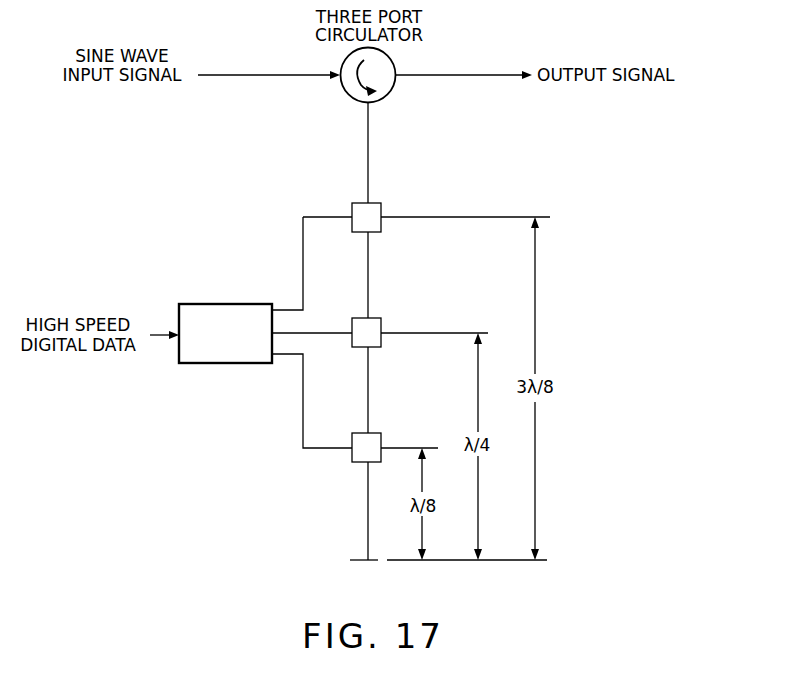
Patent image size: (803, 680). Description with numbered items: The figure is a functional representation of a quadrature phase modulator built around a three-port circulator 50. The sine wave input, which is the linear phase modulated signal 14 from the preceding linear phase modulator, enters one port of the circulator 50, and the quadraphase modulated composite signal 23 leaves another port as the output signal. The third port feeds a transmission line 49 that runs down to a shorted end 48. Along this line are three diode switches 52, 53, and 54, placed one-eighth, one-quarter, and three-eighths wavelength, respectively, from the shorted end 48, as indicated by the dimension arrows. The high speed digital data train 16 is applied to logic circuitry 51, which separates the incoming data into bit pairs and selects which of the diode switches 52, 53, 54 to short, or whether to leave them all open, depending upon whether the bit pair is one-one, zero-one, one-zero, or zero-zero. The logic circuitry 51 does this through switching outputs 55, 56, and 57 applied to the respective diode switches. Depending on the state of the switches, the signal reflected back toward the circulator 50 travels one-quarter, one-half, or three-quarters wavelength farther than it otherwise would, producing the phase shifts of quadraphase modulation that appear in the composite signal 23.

The linear phase modulated signal 14 is at (239, 72).
The high speed digital data train 16 is at (158, 334).
The composite signal 23 is at (477, 73).
The shorted end 48 is at (366, 562).
The transmission line 49 is at (368, 172).
The three-port circulator 50 is at (388, 95).
The logic circuitry 51 is at (220, 304).
The diode switch 52 is at (381, 440).
The diode switch 53 is at (381, 325).
The diode switch 54 is at (381, 210).
The switching output 55 is at (303, 251).
The switching output 56 is at (320, 333).
The switching output 57 is at (303, 422).